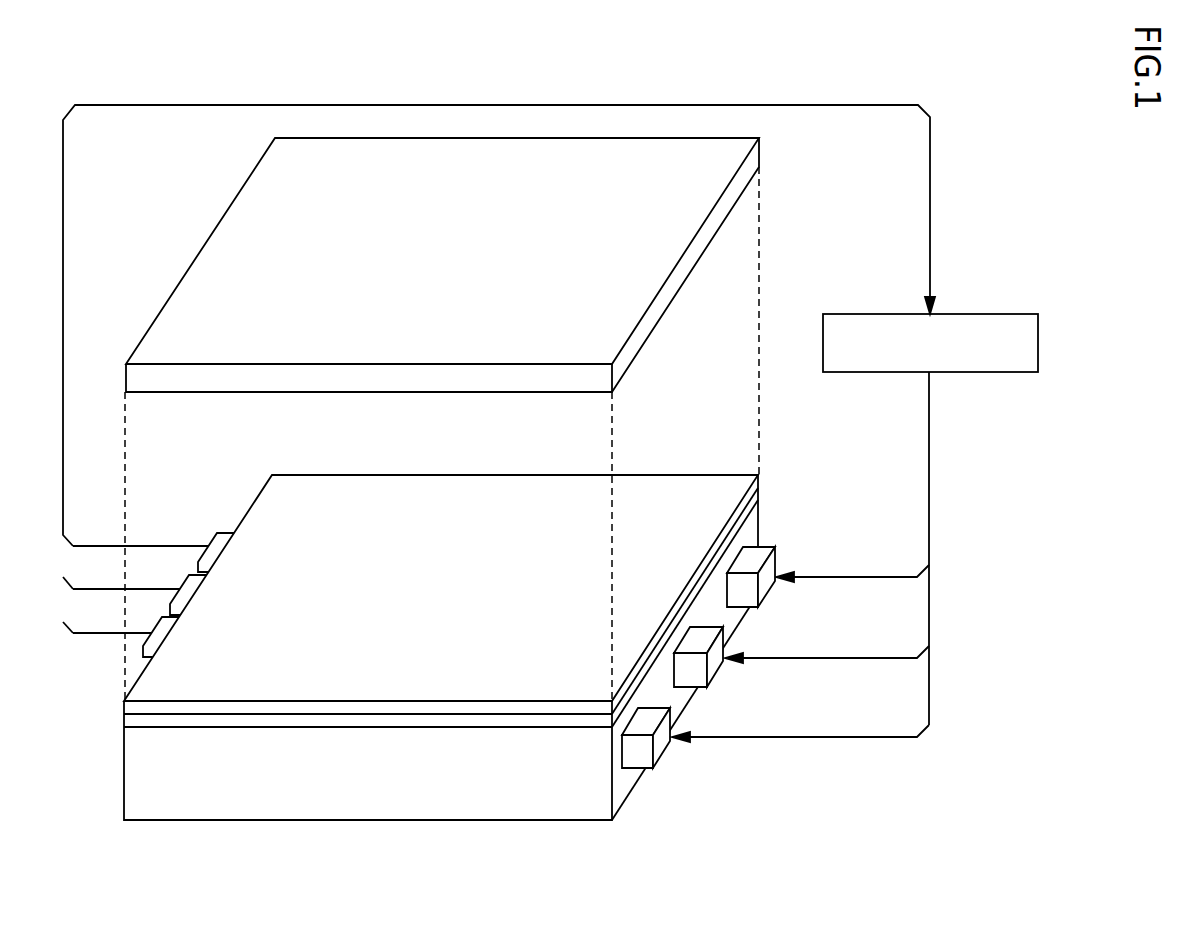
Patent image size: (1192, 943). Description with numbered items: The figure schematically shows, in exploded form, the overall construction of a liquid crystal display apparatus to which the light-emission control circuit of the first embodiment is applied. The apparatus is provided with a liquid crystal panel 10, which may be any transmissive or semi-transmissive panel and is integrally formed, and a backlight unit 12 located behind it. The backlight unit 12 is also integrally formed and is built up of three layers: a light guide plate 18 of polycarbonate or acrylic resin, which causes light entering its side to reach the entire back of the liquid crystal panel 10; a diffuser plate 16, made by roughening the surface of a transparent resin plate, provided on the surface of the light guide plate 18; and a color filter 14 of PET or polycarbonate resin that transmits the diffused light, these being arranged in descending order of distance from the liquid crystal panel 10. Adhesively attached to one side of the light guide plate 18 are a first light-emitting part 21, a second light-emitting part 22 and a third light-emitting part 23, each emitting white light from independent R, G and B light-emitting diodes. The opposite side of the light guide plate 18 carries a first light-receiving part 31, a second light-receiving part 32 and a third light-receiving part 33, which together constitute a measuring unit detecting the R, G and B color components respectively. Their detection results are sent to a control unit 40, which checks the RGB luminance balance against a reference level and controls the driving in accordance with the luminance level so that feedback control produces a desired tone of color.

The liquid crystal panel 10 is at (212, 258).
The backlight unit 12 is at (406, 702).
The color filter 14 is at (447, 710).
The diffuser plate 16 is at (287, 723).
The light guide plate 18 is at (135, 774).
The first light-emitting part 21 is at (657, 748).
The second light-emitting part 22 is at (710, 667).
The third light-emitting part 23 is at (762, 587).
The first light-receiving part 31 is at (150, 653).
The second light-receiving part 32 is at (190, 588).
The third light-receiving part 33 is at (218, 545).
The control unit 40 is at (1038, 341).